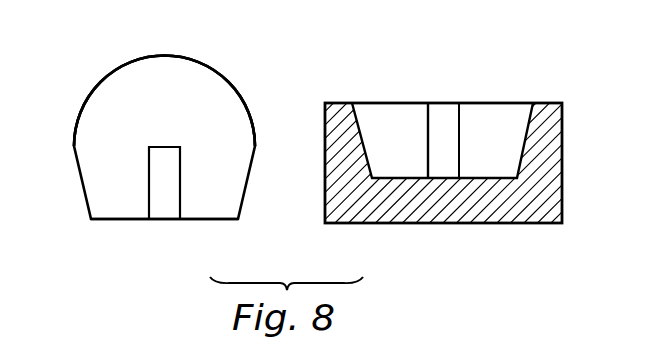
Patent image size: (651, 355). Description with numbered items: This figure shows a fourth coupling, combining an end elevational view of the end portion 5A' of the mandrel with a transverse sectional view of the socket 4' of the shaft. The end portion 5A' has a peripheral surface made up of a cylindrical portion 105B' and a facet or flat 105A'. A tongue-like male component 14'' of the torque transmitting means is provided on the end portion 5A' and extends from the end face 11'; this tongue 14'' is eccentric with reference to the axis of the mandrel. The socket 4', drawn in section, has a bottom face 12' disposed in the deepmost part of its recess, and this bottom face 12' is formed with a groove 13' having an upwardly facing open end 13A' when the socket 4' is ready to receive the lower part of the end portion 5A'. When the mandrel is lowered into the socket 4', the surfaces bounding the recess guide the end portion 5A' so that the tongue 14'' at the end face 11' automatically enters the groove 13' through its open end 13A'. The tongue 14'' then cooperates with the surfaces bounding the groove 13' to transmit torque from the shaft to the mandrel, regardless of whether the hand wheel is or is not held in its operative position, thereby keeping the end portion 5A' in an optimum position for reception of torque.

The end portion of the mandrel 5A' is at (188, 118).
The cylindrical portion 105B' is at (138, 81).
The end face 11' is at (188, 114).
The facet or flat 105A' is at (139, 248).
The tongue-like male component 14'' is at (146, 212).
The socket 4' is at (425, 158).
The bottom face 12' is at (454, 108).
The groove 13' is at (460, 108).
The open end of the groove 13A' is at (402, 108).